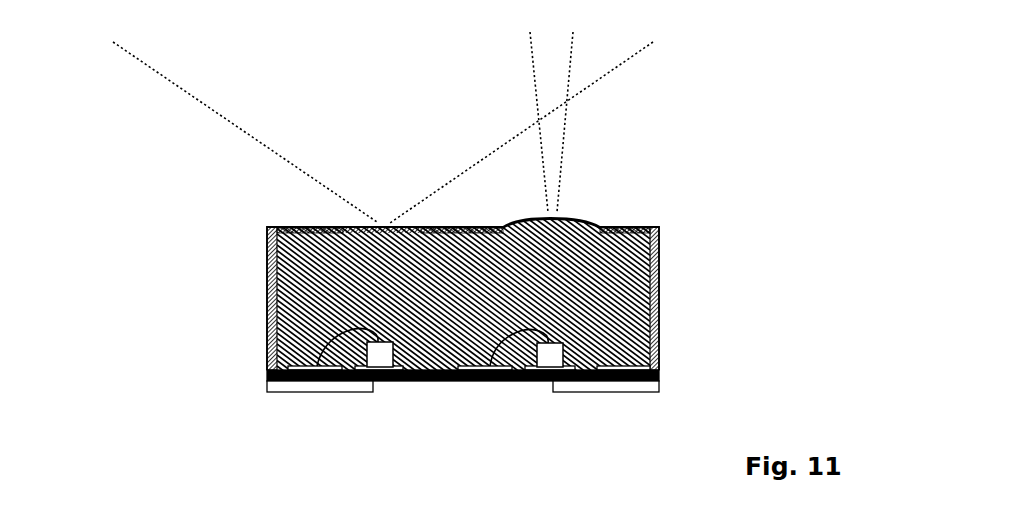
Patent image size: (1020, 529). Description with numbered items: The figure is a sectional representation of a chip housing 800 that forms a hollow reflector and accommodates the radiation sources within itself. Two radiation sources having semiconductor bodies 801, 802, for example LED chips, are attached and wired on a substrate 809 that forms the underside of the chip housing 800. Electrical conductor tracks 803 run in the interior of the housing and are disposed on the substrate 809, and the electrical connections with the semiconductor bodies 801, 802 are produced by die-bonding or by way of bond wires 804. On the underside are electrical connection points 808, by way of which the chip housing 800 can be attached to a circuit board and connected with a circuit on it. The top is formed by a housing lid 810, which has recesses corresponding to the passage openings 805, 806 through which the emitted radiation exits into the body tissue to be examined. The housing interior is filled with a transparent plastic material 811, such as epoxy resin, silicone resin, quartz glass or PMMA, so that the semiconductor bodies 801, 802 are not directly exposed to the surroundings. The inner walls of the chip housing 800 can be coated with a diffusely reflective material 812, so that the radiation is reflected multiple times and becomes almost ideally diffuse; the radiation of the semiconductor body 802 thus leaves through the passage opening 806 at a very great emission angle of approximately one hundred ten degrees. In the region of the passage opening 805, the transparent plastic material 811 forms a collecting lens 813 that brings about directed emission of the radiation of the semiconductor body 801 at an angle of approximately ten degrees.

The chip housing 800 is at (243, 253).
The semiconductor body 801 is at (552, 352).
The semiconductor body 802 is at (385, 355).
The electrical conductor tracks 803 is at (276, 366).
The bond wires 804 is at (352, 330).
The passage opening 805 is at (570, 213).
The passage opening 806 is at (382, 220).
The electrical connection points 808 is at (317, 390).
The substrate 809 is at (267, 377).
The housing lid 810 is at (659, 298).
The transparent plastic material 811 is at (303, 287).
The diffusely reflective material 812 is at (659, 248).
The collecting lens 813 is at (568, 222).